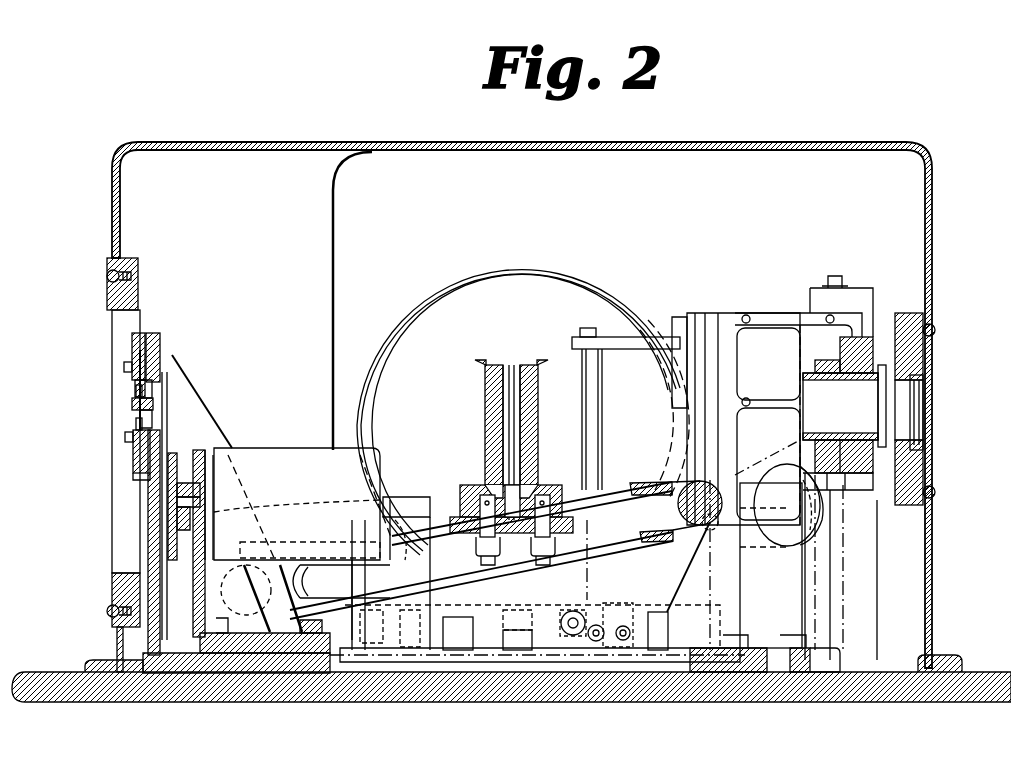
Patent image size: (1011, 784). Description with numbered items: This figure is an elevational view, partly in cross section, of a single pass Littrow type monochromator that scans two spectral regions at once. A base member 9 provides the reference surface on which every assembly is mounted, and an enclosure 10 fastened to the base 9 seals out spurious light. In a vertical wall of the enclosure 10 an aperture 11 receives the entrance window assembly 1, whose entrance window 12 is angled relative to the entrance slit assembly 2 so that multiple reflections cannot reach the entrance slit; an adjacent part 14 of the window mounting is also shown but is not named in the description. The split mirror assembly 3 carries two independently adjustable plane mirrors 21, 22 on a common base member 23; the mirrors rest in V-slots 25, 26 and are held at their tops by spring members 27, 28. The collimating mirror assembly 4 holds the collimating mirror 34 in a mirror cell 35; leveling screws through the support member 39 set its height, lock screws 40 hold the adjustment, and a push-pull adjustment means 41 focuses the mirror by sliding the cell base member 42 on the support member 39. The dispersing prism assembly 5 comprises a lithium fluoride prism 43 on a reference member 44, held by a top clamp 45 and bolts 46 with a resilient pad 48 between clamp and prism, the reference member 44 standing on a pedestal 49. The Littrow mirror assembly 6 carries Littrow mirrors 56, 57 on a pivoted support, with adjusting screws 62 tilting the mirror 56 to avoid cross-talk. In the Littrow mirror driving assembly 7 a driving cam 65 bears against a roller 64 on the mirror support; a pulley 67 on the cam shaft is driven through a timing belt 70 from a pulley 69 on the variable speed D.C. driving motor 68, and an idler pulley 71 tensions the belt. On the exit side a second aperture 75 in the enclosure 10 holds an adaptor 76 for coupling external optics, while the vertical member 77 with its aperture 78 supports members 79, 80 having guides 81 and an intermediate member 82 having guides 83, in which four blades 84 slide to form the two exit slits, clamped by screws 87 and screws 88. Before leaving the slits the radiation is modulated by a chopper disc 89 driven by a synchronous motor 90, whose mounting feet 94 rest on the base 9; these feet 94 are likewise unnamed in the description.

The entrance window assembly 1 is at (945, 408).
The entrance slit assembly 2 is at (880, 330).
The split mirror assembly 3 is at (500, 433).
The collimating mirror assembly 4 is at (518, 381).
The dispersing prism assembly 5 is at (662, 330).
The Littrow mirror assembly 6 is at (730, 303).
The Littrow mirror driving assembly 7 is at (333, 535).
The base member 9 is at (985, 685).
The enclosure 10 is at (930, 262).
The aperture 11 is at (935, 340).
The entrance window 12 is at (925, 420).
The sleeve 14 is at (886, 398).
The plane mirror 21 is at (538, 450).
The plane mirror 22 is at (485, 440).
The common base member 23 is at (460, 492).
The V-slot 25 is at (540, 480).
The V-slot 26 is at (487, 480).
The spring member 27 is at (540, 360).
The spring member 28 is at (478, 360).
The collimating mirror 34 is at (578, 300).
The mirror cell 35 is at (398, 318).
The support member 39 is at (678, 640).
The lock screw 40 is at (395, 600).
The push-pull adjustment means 41 is at (568, 610).
The cell base member 42 is at (590, 602).
The lithium fluoride prism 43 is at (600, 396).
The reference member 44 is at (640, 480).
The top clamp 45 is at (610, 337).
The bolt 46 is at (588, 328).
The pad 48 is at (610, 345).
The pedestal 49 is at (692, 556).
The Littrow mirror 56 is at (805, 340).
The Littrow mirror 57 is at (745, 452).
The adjusting screw 62 is at (750, 318).
The roller 64 is at (760, 545).
The driving cam 65 is at (822, 535).
The pulley 67 is at (700, 535).
The D.C. driving motor 68 is at (282, 540).
The pulley 69 is at (306, 580).
The timing belt 70 is at (625, 556).
The idler pulley 71 is at (372, 530).
The second aperture 75 is at (108, 276).
The adaptor 76 is at (112, 593).
The vertical member 77 is at (156, 333).
The aperture 78 is at (160, 390).
The member 79 is at (132, 340).
The member 80 is at (134, 476).
The guide 81 is at (138, 360).
The member 82 is at (132, 404).
The guide 83 is at (140, 390).
The blade 84 is at (136, 390).
The screw 87 is at (124, 366).
The screw 88 is at (125, 437).
The chopper disc 89 is at (165, 460).
The synchronous motor 90 is at (265, 450).
The foot 94 is at (255, 620).